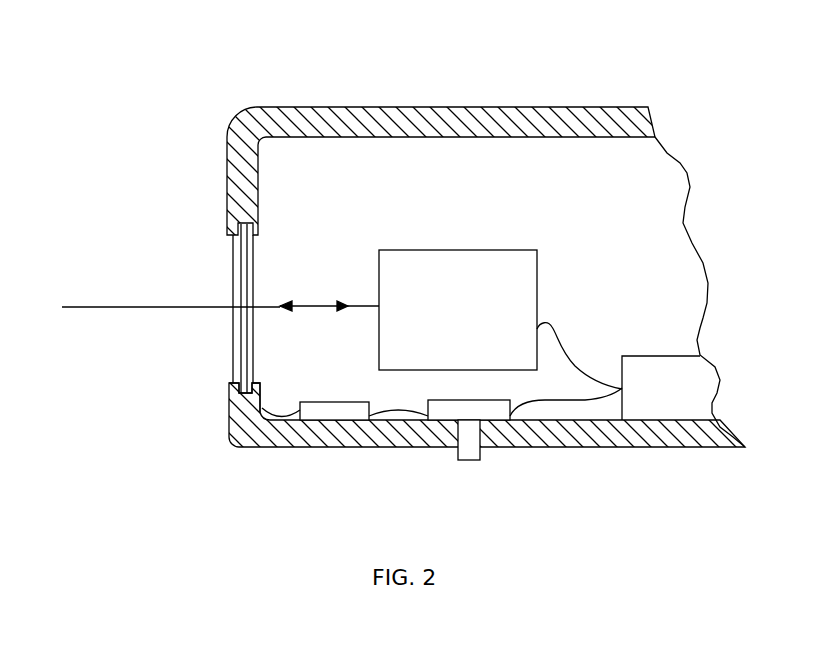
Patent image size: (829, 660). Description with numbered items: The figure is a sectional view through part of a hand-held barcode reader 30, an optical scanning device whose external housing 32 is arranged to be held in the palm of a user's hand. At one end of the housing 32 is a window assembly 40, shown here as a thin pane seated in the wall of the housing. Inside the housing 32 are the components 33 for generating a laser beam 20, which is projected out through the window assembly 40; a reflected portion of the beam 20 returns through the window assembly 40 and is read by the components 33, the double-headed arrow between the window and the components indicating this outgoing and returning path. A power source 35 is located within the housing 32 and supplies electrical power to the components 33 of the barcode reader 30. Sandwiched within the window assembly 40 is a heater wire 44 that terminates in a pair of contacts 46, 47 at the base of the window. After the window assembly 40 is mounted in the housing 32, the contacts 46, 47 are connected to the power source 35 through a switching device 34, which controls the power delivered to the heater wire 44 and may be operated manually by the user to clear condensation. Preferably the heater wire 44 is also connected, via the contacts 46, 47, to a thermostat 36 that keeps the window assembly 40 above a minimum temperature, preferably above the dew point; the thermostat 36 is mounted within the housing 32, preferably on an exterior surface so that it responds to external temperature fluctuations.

The laser beam 20 is at (90, 307).
The hand-held barcode reader 30 is at (465, 255).
The external housing 32 is at (484, 112).
The components 33 is at (517, 353).
The switching device 34 is at (437, 410).
The power source 35 is at (636, 398).
The thermostat 36 is at (314, 410).
The window assembly 40 is at (233, 341).
The heater wire 44 is at (241, 362).
The contact 46 is at (235, 408).
The contact 47 is at (215, 458).